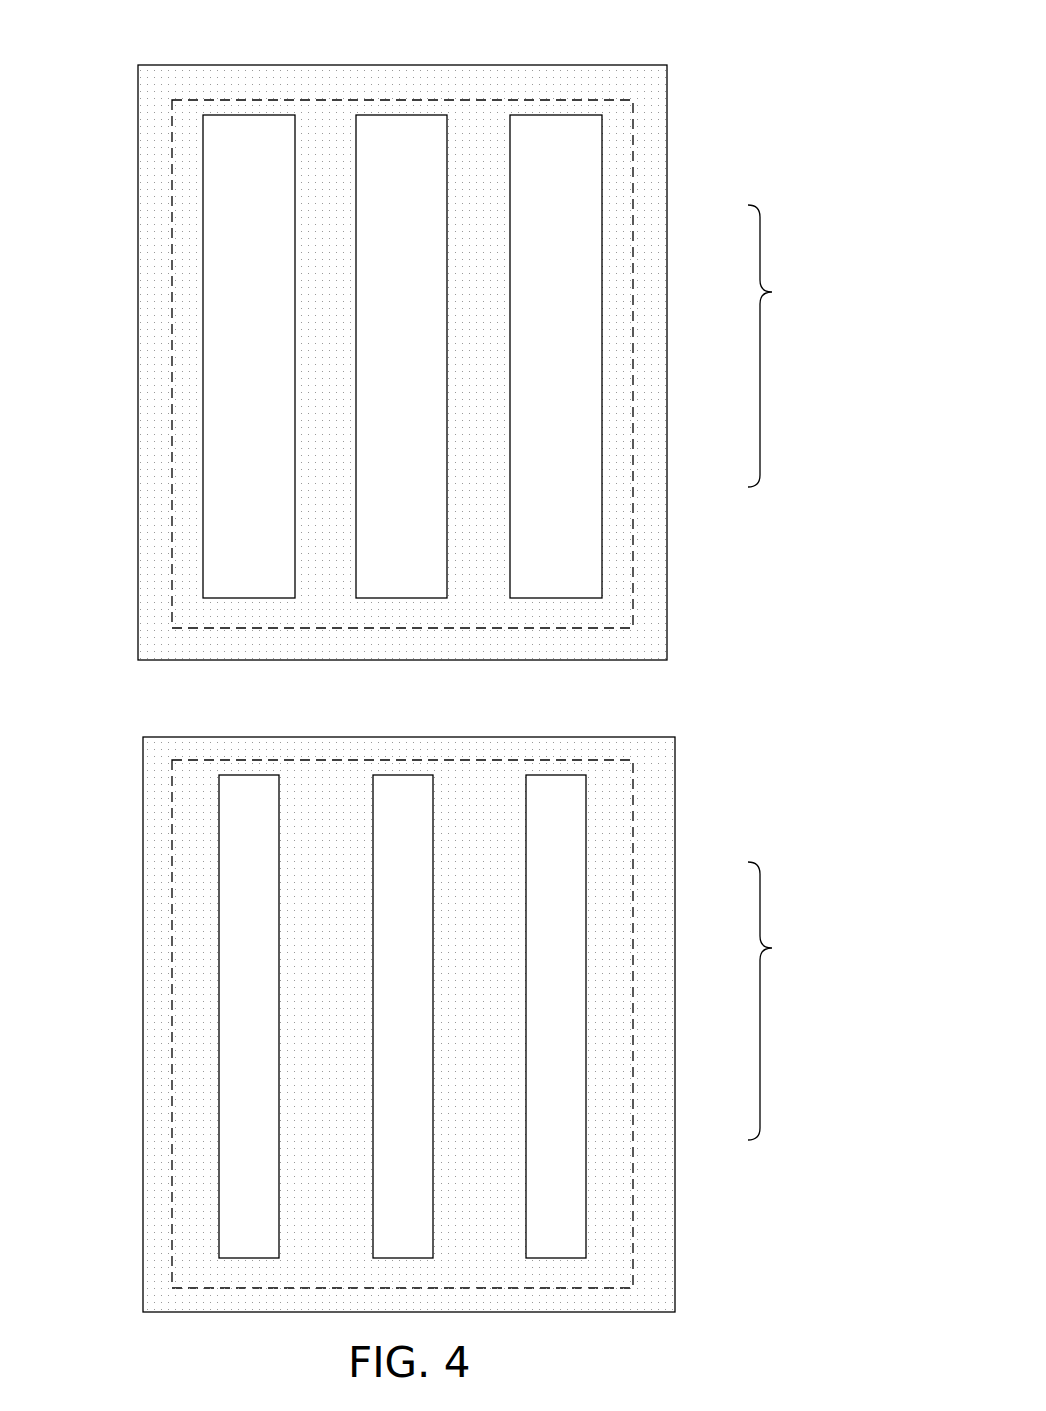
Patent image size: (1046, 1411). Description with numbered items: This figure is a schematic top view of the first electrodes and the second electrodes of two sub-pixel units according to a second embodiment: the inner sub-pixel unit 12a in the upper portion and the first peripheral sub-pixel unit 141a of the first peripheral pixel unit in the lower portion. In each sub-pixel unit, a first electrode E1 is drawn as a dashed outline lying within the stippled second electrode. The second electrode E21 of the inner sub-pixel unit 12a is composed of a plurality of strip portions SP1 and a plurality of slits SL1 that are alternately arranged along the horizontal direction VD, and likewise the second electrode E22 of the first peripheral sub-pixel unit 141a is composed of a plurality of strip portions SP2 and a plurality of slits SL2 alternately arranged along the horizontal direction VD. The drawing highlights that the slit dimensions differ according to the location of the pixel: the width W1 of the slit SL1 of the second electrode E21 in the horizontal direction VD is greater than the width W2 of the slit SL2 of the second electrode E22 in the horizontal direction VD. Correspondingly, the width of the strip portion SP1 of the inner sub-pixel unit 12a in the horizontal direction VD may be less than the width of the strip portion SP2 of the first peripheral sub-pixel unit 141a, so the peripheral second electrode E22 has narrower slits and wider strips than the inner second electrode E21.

The inner sub-pixel unit 12a is at (712, 96).
The first peripheral sub-pixel unit 141a is at (712, 761).
The first electrode E1 is at (172, 610).
The second electrode of the inner sub-pixel unit E21 is at (772, 292).
The second electrode of the first peripheral sub-pixel unit E22 is at (772, 948).
The slit SL1 is at (249, 157).
The slit SL2 is at (247, 823).
The strip portion SP1 is at (648, 233).
The strip portion SP2 is at (648, 889).
The width of the slit SL1 W1 is at (273, 364).
The width of the slit SL2 W2 is at (259, 1024).
The horizontal direction VD is at (762, 1353).